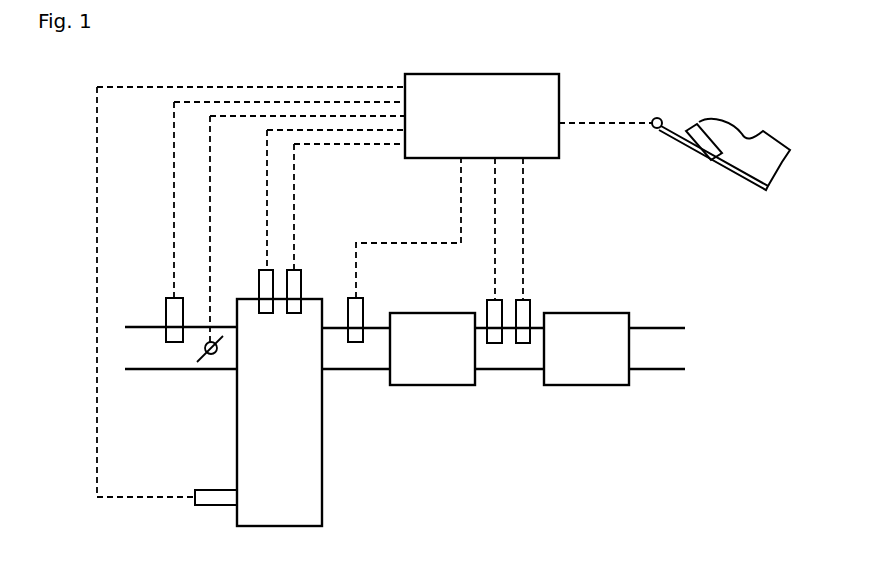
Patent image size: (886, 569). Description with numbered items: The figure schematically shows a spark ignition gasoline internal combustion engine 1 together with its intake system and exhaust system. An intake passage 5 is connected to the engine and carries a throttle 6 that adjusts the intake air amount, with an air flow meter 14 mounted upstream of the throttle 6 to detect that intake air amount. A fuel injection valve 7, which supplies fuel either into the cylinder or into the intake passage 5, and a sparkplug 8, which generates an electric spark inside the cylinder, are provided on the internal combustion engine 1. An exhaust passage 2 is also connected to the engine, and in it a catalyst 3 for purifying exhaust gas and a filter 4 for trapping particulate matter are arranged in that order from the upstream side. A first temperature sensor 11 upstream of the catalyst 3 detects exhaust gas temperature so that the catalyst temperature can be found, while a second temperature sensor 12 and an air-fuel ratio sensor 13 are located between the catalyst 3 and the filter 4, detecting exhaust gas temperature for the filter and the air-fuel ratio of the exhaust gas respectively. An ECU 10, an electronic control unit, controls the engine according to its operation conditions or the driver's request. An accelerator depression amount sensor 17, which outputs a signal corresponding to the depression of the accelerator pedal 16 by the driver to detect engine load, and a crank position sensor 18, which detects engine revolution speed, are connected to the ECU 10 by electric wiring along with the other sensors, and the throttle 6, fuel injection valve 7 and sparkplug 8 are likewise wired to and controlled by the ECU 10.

The internal combustion engine 1 is at (322, 497).
The exhaust passage 2 is at (508, 369).
The catalyst 3 is at (430, 385).
The filter 4 is at (585, 385).
The intake passage 5 is at (175, 369).
The throttle 6 is at (211, 356).
The fuel injection valve 7 is at (301, 280).
The sparkplug 8 is at (259, 275).
The ECU 10 is at (405, 158).
The first temperature sensor 11 is at (363, 305).
The second temperature sensor 12 is at (487, 305).
The air-fuel ratio sensor 13 is at (530, 305).
The air flow meter 14 is at (166, 306).
The accelerator pedal 16 is at (725, 157).
The accelerator depression amount sensor 17 is at (653, 127).
The crank position sensor 18 is at (218, 490).